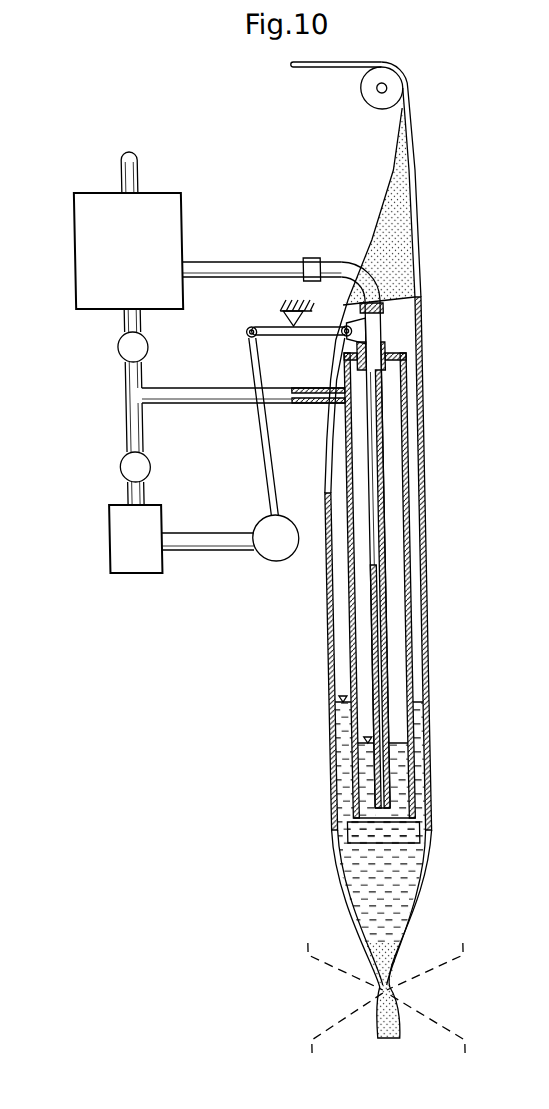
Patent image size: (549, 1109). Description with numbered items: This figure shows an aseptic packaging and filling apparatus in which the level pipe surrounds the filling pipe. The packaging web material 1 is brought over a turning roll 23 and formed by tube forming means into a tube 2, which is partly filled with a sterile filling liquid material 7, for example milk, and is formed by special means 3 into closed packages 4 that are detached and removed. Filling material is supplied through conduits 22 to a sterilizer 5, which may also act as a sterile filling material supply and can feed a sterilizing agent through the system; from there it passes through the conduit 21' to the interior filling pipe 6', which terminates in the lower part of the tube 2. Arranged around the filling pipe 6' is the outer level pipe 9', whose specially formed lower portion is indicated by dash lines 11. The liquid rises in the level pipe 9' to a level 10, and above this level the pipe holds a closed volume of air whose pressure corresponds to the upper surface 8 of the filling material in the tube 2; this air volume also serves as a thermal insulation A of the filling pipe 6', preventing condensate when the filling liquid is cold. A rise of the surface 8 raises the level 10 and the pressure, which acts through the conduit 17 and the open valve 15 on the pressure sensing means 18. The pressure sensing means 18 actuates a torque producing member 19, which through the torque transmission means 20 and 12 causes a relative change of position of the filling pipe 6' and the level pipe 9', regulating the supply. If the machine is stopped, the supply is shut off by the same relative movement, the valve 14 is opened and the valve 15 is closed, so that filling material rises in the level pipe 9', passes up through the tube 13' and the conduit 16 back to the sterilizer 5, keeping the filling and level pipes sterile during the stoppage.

The packaging web material 1 is at (342, 70).
The turning roll 23 is at (401, 88).
The conduits 22 is at (131, 172).
The sterilizer 5 is at (94, 283).
The conduit 21' is at (281, 265).
The tube 13' is at (332, 254).
The torque transmission means 12 is at (272, 335).
The valve 14 is at (147, 346).
The conduit 16 is at (145, 381).
The conduit 17 is at (145, 446).
The valve 15 is at (150, 477).
The pressure sensing means 18 is at (147, 573).
The torque producing member 19 is at (281, 562).
The torque transmission means 20 is at (269, 462).
The tube 2 is at (421, 460).
The filling pipe 6' is at (409, 554).
The thermal insulation A is at (394, 552).
The level pipe 9' is at (403, 580).
The upper surface 8 is at (417, 692).
The filling liquid material 7 is at (419, 720).
The level 10 is at (383, 749).
The dash lines 11 is at (414, 806).
The special means 3 is at (337, 998).
The closed packages 4 is at (389, 1032).